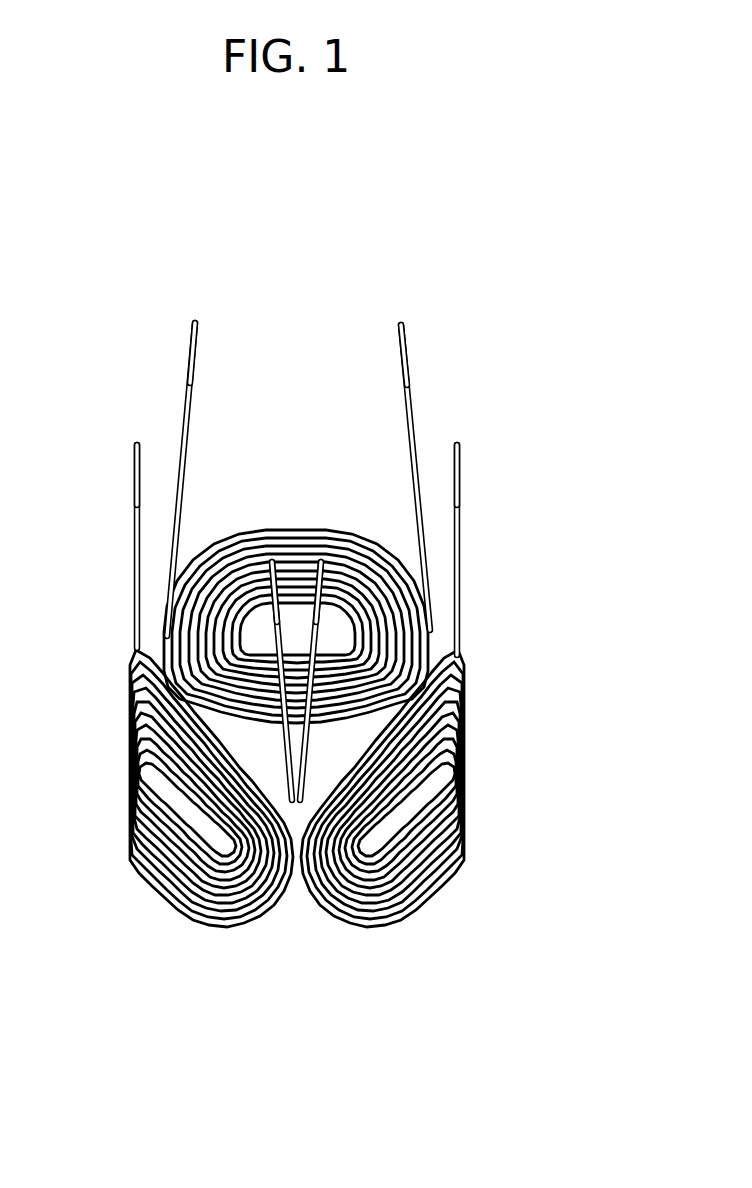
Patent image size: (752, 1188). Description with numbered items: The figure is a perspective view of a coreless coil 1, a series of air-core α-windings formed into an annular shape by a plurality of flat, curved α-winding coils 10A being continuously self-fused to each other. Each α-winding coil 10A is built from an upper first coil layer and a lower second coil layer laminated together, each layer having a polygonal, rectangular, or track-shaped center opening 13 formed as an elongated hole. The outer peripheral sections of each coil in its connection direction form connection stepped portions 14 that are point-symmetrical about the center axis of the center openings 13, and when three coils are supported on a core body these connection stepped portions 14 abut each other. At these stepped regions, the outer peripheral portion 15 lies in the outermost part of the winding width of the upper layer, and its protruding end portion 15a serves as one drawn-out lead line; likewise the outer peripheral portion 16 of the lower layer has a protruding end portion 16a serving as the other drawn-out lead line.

The coreless coil 1 is at (329, 280).
The α-winding coil 10A is at (316, 514).
The center opening 13 is at (262, 632).
The connection stepped portion 14 is at (145, 614).
The outer peripheral portion 15 is at (143, 610).
The protruding end portion 15a is at (188, 388).
The outer peripheral portion 16 is at (134, 668).
The protruding end portion 16a is at (134, 466).